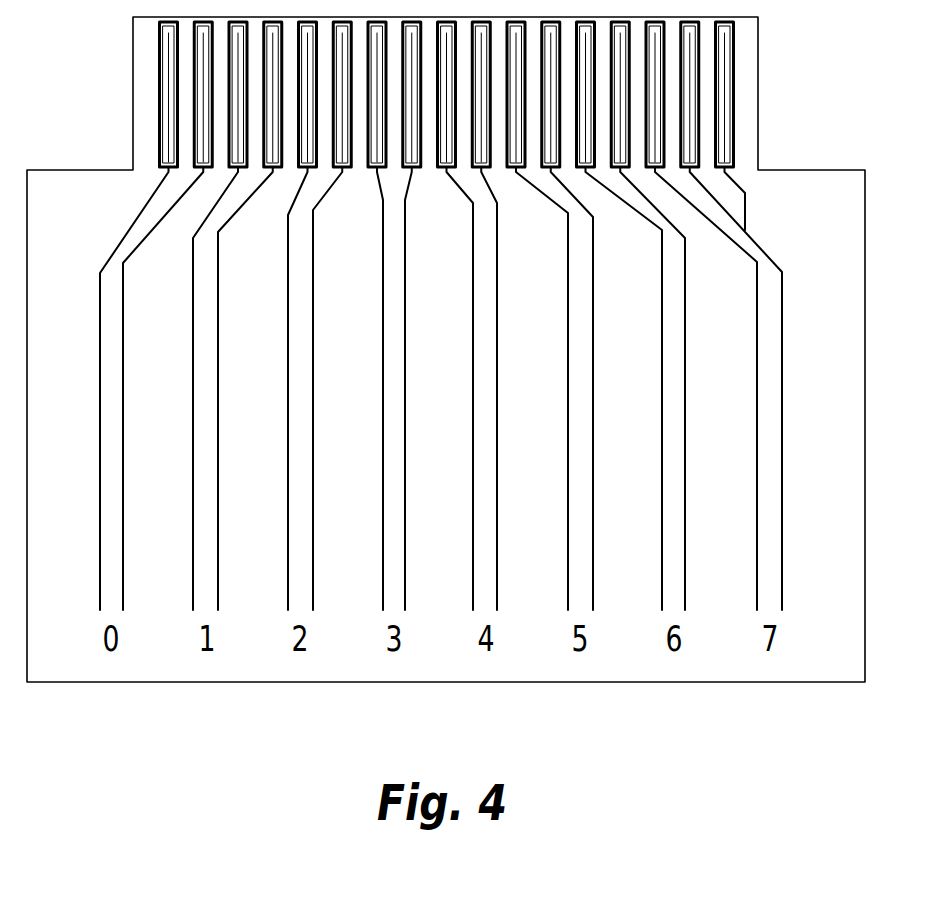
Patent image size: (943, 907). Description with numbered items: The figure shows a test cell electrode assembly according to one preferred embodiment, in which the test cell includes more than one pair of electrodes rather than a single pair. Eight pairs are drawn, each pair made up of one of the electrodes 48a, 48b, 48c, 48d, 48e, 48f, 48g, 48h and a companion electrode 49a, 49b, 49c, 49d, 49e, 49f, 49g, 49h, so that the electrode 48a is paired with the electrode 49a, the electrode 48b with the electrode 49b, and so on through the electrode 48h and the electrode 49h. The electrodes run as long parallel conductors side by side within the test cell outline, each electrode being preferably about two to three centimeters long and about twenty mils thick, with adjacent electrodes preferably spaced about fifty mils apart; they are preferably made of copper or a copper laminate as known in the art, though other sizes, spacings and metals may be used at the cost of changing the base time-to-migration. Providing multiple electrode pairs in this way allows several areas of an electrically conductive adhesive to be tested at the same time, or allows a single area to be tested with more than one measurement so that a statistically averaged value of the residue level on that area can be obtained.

The electrode 48a is at (99, 342).
The electrode 48b is at (192, 342).
The electrode 48c is at (287, 342).
The electrode 48d is at (382, 342).
The electrode 48e is at (472, 342).
The electrode 48f is at (567, 342).
The electrode 48g is at (661, 342).
The electrode 48h is at (756, 342).
The electrode 49a is at (124, 478).
The electrode 49b is at (219, 478).
The electrode 49c is at (314, 478).
The electrode 49d is at (406, 478).
The electrode 49e is at (498, 478).
The electrode 49f is at (594, 478).
The electrode 49g is at (686, 478).
The electrode 49h is at (783, 478).